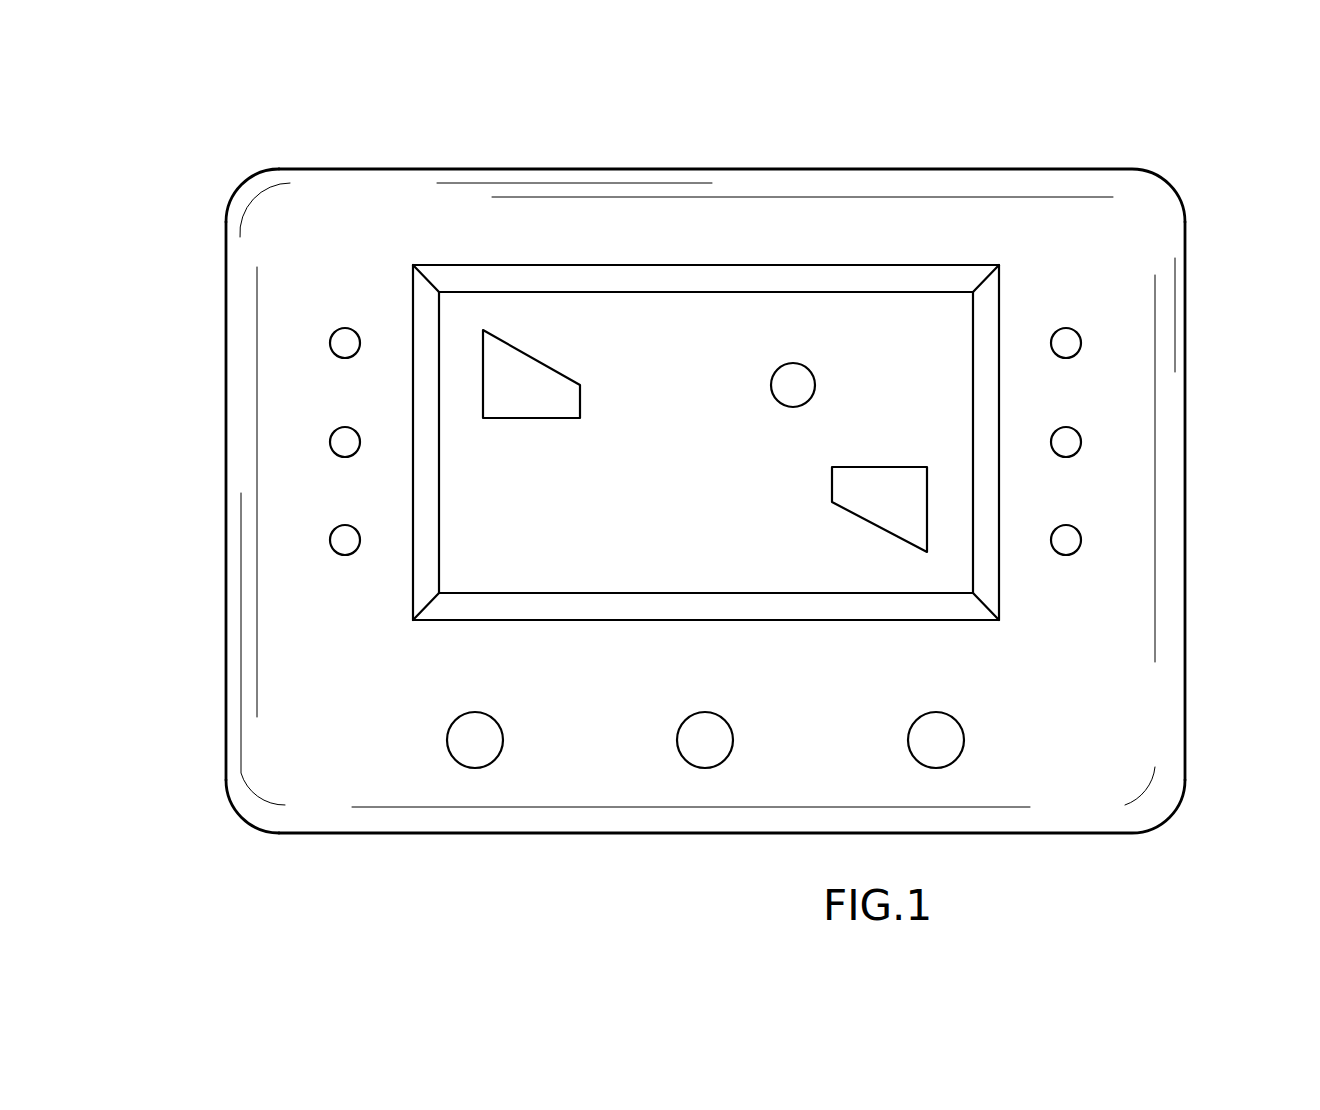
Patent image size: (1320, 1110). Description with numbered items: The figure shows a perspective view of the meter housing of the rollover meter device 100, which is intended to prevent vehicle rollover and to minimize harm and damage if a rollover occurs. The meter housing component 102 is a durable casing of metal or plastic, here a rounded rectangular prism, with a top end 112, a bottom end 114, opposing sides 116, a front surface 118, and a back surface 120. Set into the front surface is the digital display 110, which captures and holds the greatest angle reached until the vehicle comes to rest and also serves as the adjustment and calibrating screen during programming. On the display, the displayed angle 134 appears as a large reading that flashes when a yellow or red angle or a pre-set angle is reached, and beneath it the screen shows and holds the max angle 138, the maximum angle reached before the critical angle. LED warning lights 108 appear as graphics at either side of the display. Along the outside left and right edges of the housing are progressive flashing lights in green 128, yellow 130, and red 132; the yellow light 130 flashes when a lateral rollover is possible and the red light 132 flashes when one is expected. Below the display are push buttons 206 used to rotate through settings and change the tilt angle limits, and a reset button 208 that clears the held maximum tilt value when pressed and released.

The rollover meter device 100 is at (1137, 152).
The meter housing component 102 is at (1152, 235).
The LED warning lights 108 is at (532, 350).
The digital display 110 is at (522, 573).
The top end 112 is at (1140, 169).
The bottom end 114 is at (1165, 820).
The opposing sides 116 is at (226, 613).
The front surface 118 is at (235, 810).
The back surface 120 is at (278, 168).
The green flashing lights 128 is at (342, 338).
The yellow flashing lights 130 is at (342, 440).
The red flashing lights 132 is at (344, 537).
The displayed angle 134 is at (738, 392).
The max angle 138 is at (738, 547).
The push buttons 206 is at (475, 752).
The reset button 208 is at (722, 745).